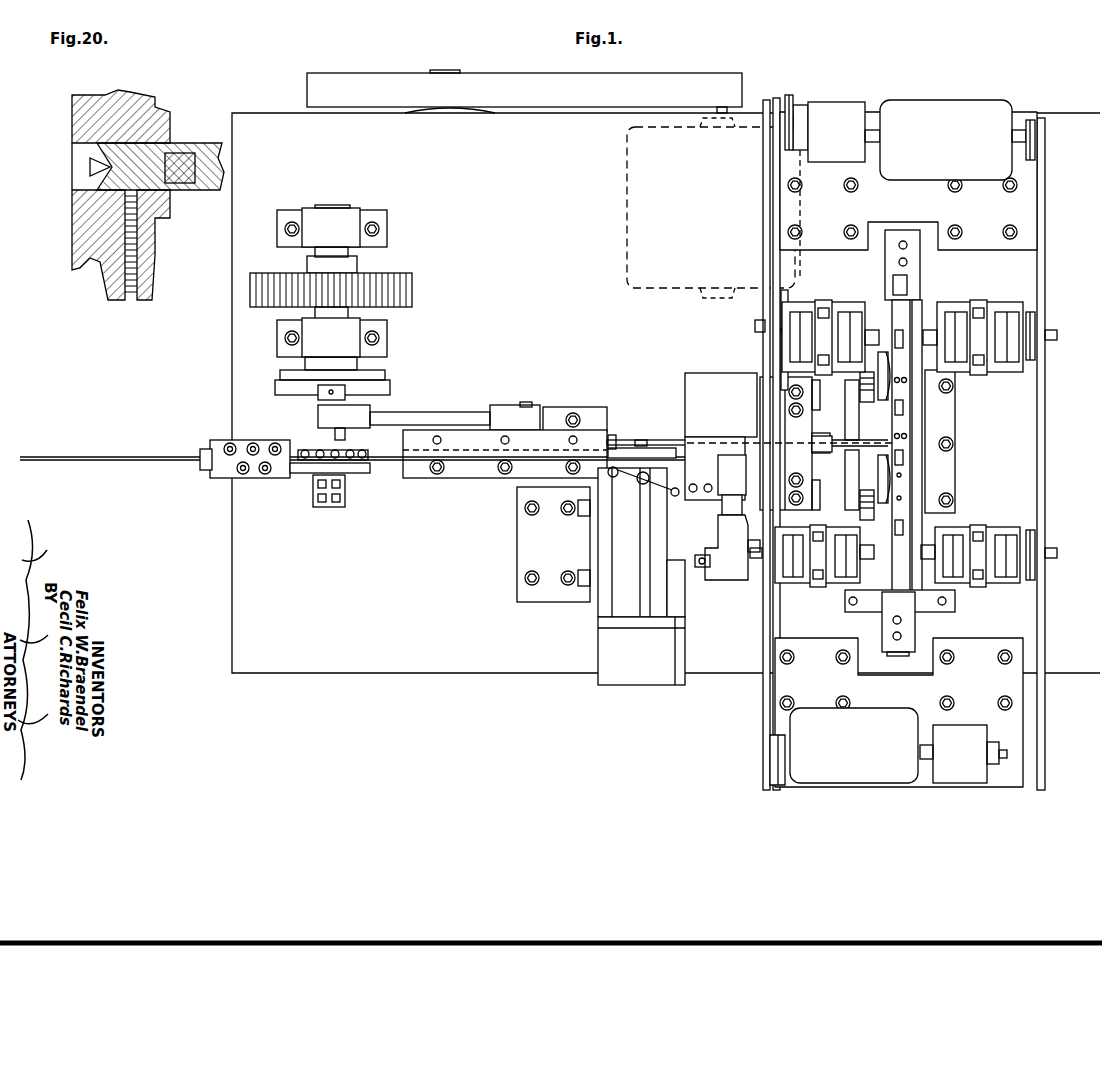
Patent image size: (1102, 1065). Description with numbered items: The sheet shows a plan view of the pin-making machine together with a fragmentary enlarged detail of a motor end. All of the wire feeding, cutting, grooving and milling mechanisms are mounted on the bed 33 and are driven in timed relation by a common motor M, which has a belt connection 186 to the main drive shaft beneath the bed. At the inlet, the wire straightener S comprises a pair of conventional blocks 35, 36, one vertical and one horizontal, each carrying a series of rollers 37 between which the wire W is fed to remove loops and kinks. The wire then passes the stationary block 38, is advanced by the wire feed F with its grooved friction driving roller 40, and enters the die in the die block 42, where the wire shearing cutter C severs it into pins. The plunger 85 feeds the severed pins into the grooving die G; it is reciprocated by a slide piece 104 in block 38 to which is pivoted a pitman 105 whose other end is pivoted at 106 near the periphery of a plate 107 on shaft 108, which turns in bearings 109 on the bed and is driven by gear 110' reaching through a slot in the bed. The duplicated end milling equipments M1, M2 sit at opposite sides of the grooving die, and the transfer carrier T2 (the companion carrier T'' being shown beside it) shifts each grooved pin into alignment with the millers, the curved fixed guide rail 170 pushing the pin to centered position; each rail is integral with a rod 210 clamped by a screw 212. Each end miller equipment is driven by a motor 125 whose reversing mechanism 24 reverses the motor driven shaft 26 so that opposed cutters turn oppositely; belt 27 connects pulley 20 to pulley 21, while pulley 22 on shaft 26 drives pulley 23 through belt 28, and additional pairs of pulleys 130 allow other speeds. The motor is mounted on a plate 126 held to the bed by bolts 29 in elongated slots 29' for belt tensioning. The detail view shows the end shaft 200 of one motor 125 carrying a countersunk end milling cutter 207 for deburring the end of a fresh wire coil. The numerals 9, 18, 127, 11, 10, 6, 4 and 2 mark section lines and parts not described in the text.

In FIG. 20, the end shaft 200 is at (198, 143).
In FIG. 1, the end shaft 200 is at (772, 780).
In FIG. 20, the countersunk end milling cutter 207 is at (100, 178).
In FIG. 1, the bed 33 is at (440, 673).
In FIG. 1, the motor M is at (627, 200).
In FIG. 1, the belt connection 186 is at (538, 90).
In FIG. 1, the bearings 109 is at (355, 215).
In FIG. 1, the gear 110' is at (355, 277).
In FIG. 1, the shaft 108 is at (345, 308).
In FIG. 1, the plate 107 is at (390, 388).
In FIG. 1, the pivot 106 is at (330, 435).
In FIG. 1, the pitman 105 is at (455, 418).
In FIG. 1, the slide piece 104 is at (585, 430).
In FIG. 1, the stationary block 38 is at (475, 452).
In FIG. 1, the wire W is at (115, 463).
In FIG. 1, the block 36 is at (215, 475).
In FIG. 1, the rollers 37 is at (228, 446).
In FIG. 1, the block 35 is at (365, 475).
In FIG. 1, the wire straightener S is at (300, 480).
In FIG. 1, the wire feed F is at (612, 575).
In FIG. 1, the friction wire driving roller 40 is at (632, 462).
In FIG. 1, the plunger 85 is at (660, 440).
In FIG. 1, the die block 42 is at (695, 385).
In FIG. 1, the wire shearing cutter C is at (733, 475).
In FIG. 1, the grooving die G is at (783, 410).
In FIG. 1, the spring 9 is at (828, 380).
In FIG. 1, the belt 28 is at (763, 257).
In FIG. 1, the belt 27 is at (1045, 262).
In FIG. 1, the plate 126 is at (1020, 200).
In FIG. 1, the bolts 29 is at (898, 444).
In FIG. 1, the elongated bolt slots 29' is at (989, 215).
In FIG. 1, the motor driven shaft 26 is at (793, 112).
In FIG. 1, the reversing mechanism 24 is at (845, 110).
In FIG. 1, the driving motor 125 is at (970, 108).
In FIG. 1, the pulley 20 is at (1045, 135).
In FIG. 1, the pulley 22 is at (786, 100).
In FIG. 1, the additional pairs of pulleys 130 is at (787, 96).
In FIG. 1, the section line 18 is at (817, 164).
In FIG. 1, the pulley 23 is at (763, 330).
In FIG. 1, the lever 127 is at (762, 350).
In FIG. 1, the turret T'' is at (915, 415).
In FIG. 1, the transfer carrier T2 is at (922, 480).
In FIG. 1, the guide rail 170 is at (888, 462).
In FIG. 1, the rod 210 is at (842, 445).
In FIG. 1, the screw 212 is at (866, 440).
In FIG. 1, the end milling equipment M1 is at (838, 298).
In FIG. 1, the pulley 21 is at (1038, 352).
In FIG. 1, the end milling equipment M2 is at (800, 590).
In FIG. 1, the section line 11 is at (908, 431).
In FIG. 1, the section line 10 is at (894, 332).
In FIG. 1, the section line 6 is at (757, 482).
In FIG. 1, the section line 4 is at (643, 562).
In FIG. 1, the section line 2 is at (151, 697).